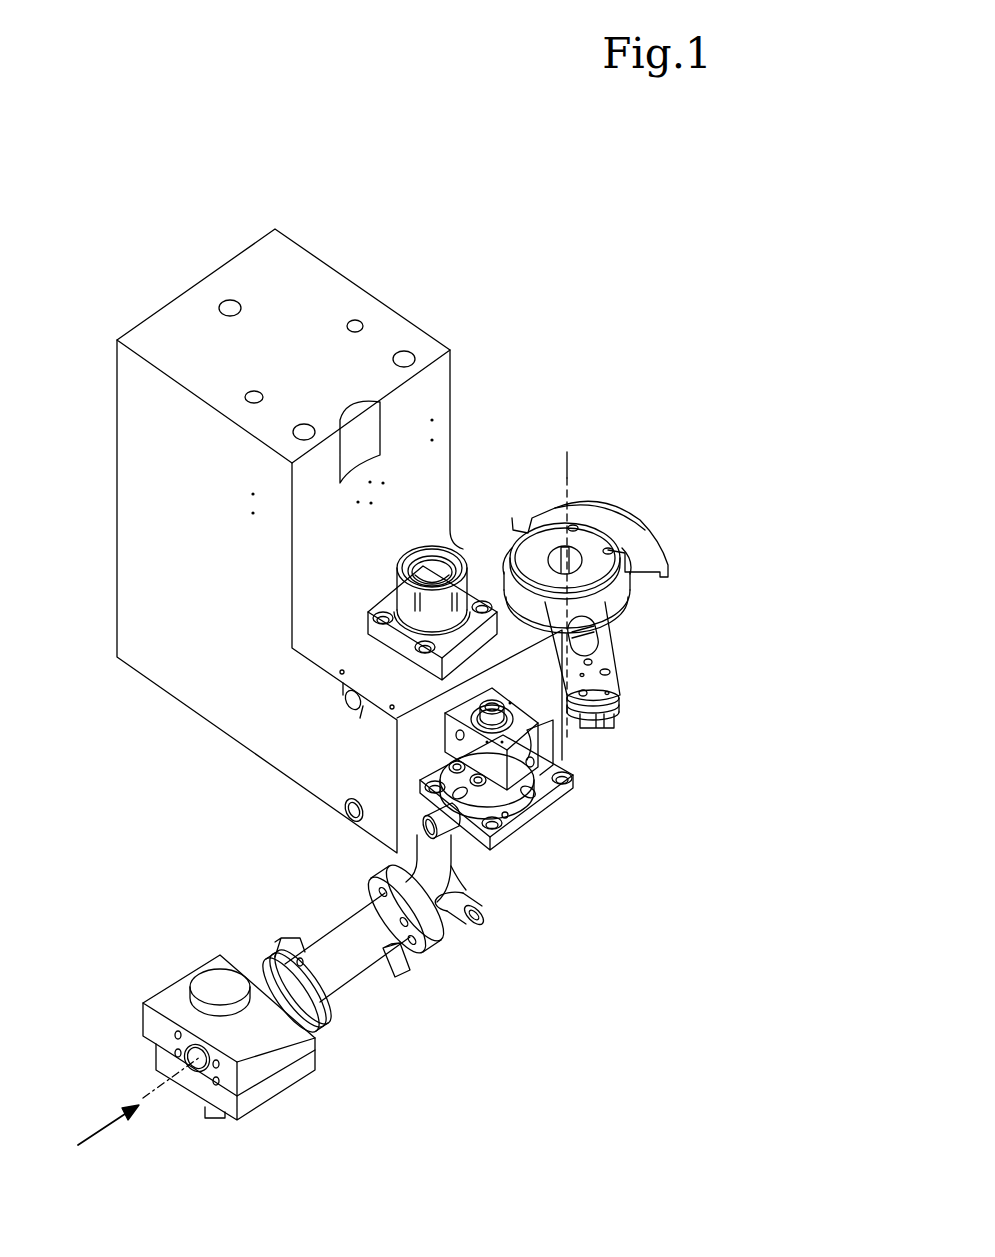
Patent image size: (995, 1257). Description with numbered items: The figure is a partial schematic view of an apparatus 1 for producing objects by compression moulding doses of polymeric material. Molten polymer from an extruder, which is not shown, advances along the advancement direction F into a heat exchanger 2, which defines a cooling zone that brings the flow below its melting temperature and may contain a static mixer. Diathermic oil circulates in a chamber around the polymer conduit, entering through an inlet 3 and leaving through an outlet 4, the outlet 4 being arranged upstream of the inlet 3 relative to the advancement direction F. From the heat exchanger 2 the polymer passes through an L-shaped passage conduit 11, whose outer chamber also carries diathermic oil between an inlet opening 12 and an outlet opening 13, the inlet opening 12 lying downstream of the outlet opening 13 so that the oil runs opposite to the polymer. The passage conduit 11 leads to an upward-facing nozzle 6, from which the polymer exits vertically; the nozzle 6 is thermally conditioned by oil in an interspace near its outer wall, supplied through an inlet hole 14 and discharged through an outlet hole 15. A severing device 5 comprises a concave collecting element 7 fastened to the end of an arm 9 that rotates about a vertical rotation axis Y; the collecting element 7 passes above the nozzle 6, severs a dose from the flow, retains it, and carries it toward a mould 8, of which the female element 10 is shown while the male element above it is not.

The apparatus 1 is at (132, 192).
The heat exchanger 2 is at (343, 977).
The inlet 3 is at (404, 970).
The outlet 4 is at (287, 945).
The severing device 5 is at (660, 605).
The nozzle 6 is at (474, 697).
The collecting element 7 is at (626, 731).
The mould 8 is at (478, 460).
The arm 9 is at (612, 657).
The female element 10 is at (465, 546).
The passage conduit 11 is at (490, 868).
The inlet opening 12 is at (432, 820).
The outlet opening 13 is at (484, 921).
The inlet hole 14 is at (456, 736).
The outlet hole 15 is at (532, 764).
The rotation axis Y is at (572, 466).
The advancement direction F is at (97, 1127).